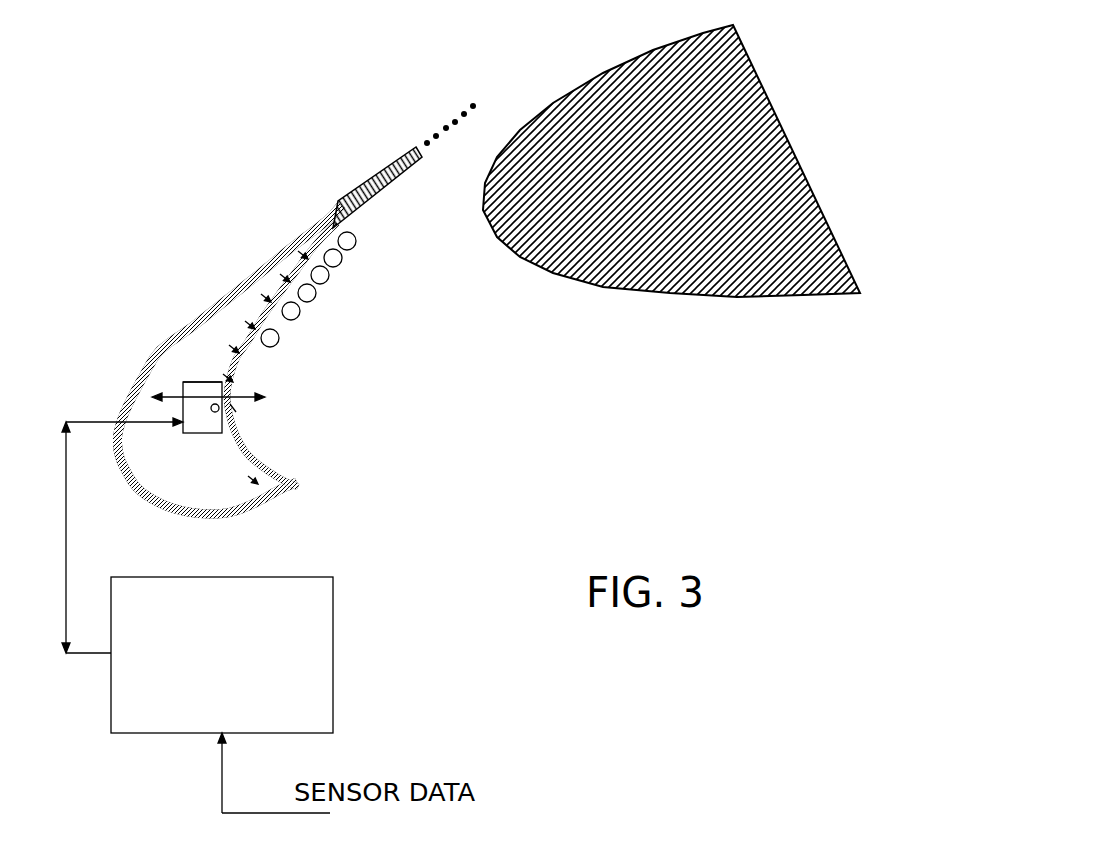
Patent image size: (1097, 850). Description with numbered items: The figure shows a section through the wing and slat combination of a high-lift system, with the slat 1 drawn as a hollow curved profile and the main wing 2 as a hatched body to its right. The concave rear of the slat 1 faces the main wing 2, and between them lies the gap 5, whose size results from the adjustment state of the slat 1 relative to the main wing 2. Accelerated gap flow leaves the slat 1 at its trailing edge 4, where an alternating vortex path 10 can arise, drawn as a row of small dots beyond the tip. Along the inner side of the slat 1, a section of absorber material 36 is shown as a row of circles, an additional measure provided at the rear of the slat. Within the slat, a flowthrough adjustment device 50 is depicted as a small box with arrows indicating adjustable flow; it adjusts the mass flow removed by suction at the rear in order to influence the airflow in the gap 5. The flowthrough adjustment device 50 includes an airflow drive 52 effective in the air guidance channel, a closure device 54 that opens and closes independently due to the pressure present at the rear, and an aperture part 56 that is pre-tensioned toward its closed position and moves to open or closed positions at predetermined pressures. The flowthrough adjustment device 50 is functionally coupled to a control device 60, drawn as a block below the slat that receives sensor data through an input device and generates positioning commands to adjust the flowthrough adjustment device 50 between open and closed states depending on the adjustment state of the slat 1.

The slat 1 is at (340, 200).
The main wing 2 is at (675, 263).
The trailing edge 4 is at (406, 136).
The gap 5 is at (460, 212).
The alternating vortex path 10 is at (453, 87).
The absorber material 36 is at (317, 290).
The flowthrough adjustment device 50 is at (190, 436).
The airflow drive 52 is at (205, 392).
The closure device 54 is at (233, 408).
The aperture part 56 is at (212, 411).
The control device 60 is at (222, 655).